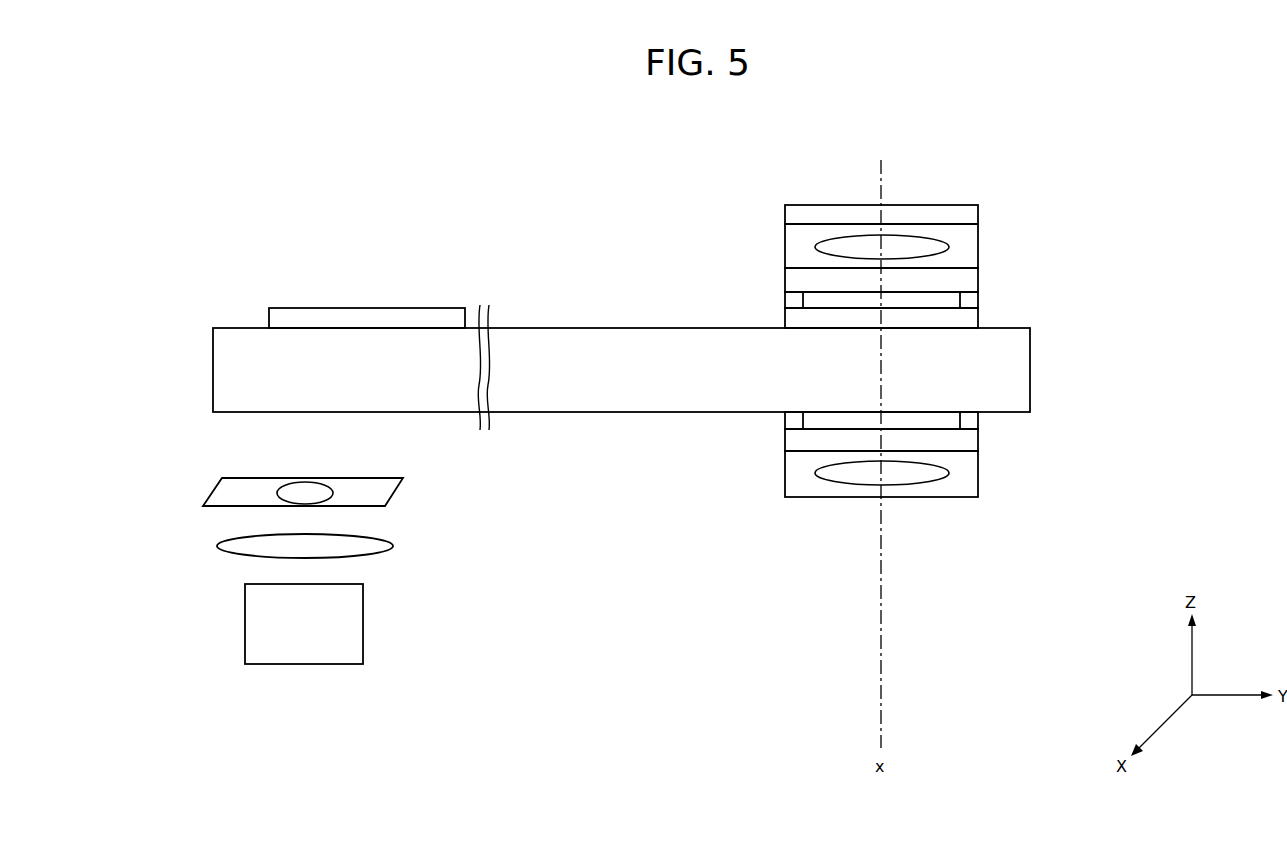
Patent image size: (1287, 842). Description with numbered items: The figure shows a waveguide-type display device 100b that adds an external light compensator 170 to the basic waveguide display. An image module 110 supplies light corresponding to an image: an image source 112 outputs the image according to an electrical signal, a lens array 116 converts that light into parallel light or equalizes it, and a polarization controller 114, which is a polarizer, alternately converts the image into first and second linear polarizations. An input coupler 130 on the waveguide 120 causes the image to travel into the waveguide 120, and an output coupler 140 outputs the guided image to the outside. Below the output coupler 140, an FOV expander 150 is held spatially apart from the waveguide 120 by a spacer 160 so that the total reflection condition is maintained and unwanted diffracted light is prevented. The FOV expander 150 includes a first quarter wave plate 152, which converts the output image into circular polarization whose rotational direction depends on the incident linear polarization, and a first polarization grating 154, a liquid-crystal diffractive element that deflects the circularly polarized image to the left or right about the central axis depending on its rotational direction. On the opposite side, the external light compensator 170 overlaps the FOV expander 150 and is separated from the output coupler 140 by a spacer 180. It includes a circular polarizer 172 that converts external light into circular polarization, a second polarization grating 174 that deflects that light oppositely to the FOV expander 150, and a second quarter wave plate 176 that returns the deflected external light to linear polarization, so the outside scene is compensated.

The waveguide-type display device 100b is at (211, 300).
The image module 110 is at (375, 571).
The image source 112 is at (363, 624).
The polarization controller 114 is at (395, 492).
The lens array 116 is at (393, 546).
The waveguide 120 is at (1031, 370).
The input coupler 130 is at (374, 305).
The output coupler 140 is at (978, 322).
The FOV expander 150 is at (961, 478).
The first 1/4 wave plate 152 is at (978, 444).
The first polarization grating 154 is at (978, 478).
The spacer 160 is at (978, 419).
The external light compensator 170 is at (973, 227).
The circular polarizer 172 is at (978, 213).
The second polarization grating 174 is at (978, 247).
The second 1/4 wave plate 176 is at (978, 283).
The spacer 180 is at (978, 303).